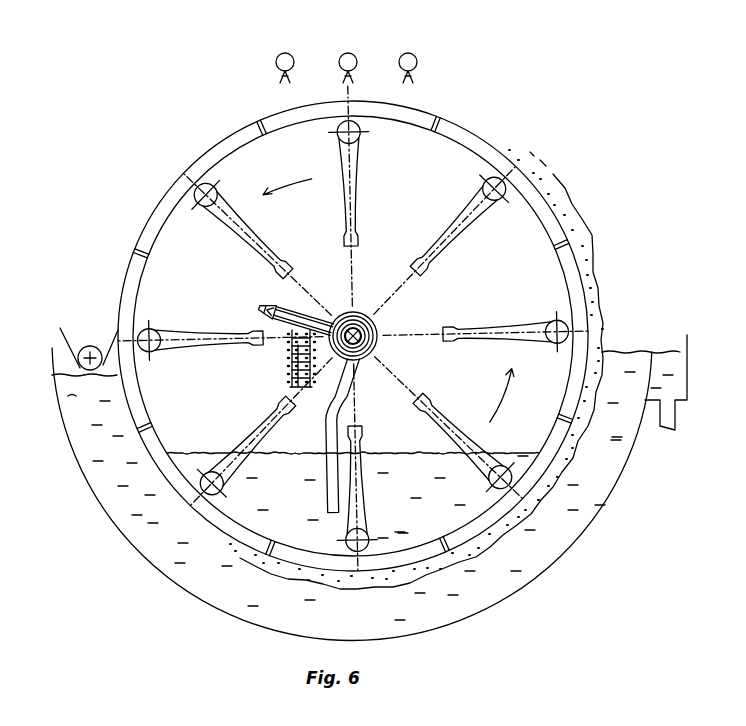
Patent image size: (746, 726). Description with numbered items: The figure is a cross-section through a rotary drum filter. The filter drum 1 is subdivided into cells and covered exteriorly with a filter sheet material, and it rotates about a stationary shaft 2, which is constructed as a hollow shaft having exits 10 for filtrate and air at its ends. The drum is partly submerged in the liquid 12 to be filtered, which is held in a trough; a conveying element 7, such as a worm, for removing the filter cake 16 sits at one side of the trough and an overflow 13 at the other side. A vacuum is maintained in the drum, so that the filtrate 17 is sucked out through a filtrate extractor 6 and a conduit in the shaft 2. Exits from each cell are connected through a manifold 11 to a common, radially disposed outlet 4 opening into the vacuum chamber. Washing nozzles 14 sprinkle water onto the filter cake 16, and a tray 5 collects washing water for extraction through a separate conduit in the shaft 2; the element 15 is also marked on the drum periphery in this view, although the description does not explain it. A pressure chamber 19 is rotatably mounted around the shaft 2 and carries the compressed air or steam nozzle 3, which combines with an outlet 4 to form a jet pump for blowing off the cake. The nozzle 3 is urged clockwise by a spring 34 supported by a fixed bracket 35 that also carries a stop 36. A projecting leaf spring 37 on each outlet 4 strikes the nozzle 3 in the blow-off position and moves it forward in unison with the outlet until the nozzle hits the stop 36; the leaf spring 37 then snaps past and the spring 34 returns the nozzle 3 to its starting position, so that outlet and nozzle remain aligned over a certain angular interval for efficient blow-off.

The filter drum 1 is at (353, 336).
The shaft 2 is at (353, 316).
The nozzle 3 is at (298, 305).
The outlet 4 is at (353, 336).
The tray 5 is at (340, 231).
The filtrate extractor 6 is at (332, 436).
The conveying element 7 is at (88, 345).
The exits 10 is at (371, 332).
The manifold 11 is at (353, 336).
The liquid 12 is at (365, 618).
The overflow 13 is at (650, 358).
The washing nozzle 14 is at (293, 58).
The rim segments 15 is at (346, 336).
The filter cake 16 is at (253, 568).
The filtrate 17 is at (296, 498).
The pressure chamber 19 is at (374, 340).
The spring 34 is at (290, 370).
The fixed bracket 35 is at (291, 384).
The stop 36 is at (290, 352).
The leaf spring 37 is at (293, 278).